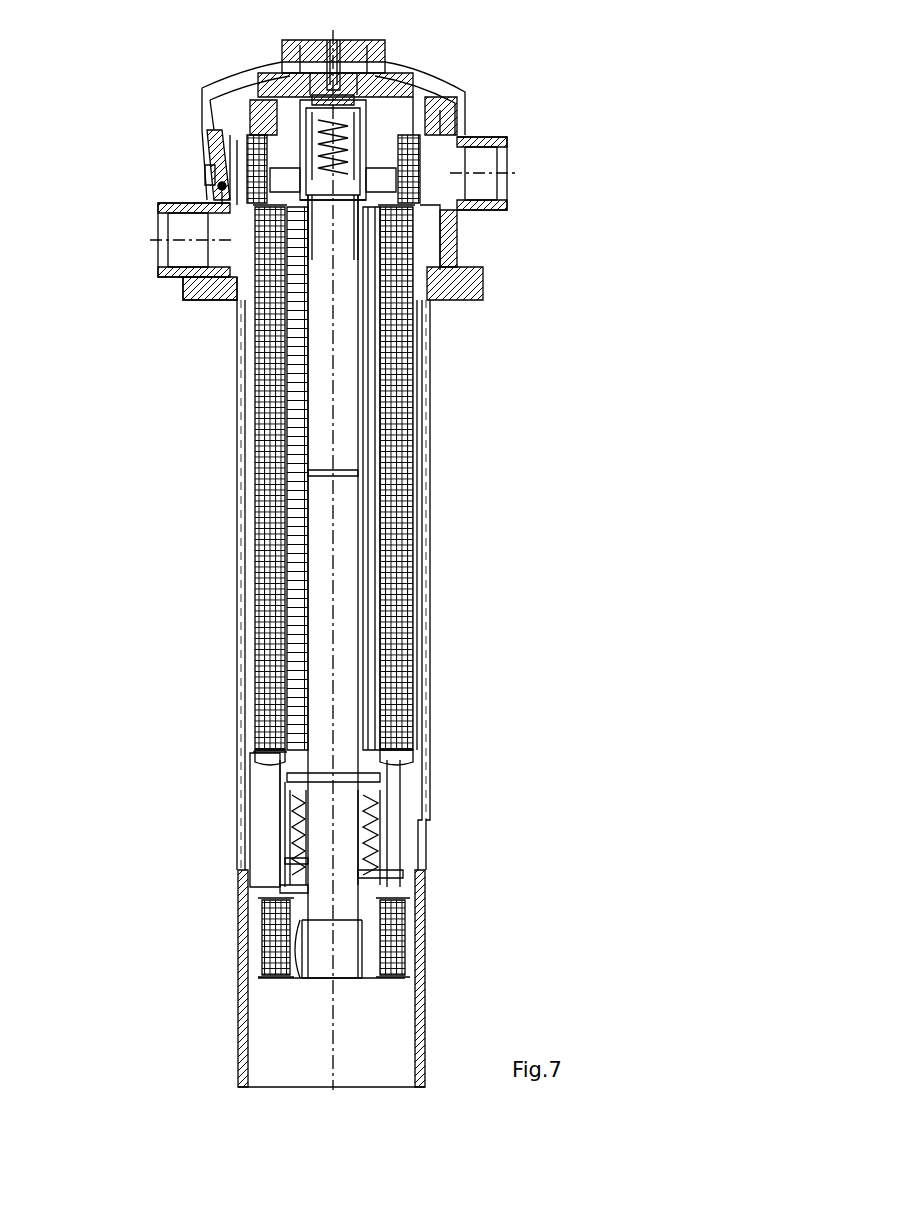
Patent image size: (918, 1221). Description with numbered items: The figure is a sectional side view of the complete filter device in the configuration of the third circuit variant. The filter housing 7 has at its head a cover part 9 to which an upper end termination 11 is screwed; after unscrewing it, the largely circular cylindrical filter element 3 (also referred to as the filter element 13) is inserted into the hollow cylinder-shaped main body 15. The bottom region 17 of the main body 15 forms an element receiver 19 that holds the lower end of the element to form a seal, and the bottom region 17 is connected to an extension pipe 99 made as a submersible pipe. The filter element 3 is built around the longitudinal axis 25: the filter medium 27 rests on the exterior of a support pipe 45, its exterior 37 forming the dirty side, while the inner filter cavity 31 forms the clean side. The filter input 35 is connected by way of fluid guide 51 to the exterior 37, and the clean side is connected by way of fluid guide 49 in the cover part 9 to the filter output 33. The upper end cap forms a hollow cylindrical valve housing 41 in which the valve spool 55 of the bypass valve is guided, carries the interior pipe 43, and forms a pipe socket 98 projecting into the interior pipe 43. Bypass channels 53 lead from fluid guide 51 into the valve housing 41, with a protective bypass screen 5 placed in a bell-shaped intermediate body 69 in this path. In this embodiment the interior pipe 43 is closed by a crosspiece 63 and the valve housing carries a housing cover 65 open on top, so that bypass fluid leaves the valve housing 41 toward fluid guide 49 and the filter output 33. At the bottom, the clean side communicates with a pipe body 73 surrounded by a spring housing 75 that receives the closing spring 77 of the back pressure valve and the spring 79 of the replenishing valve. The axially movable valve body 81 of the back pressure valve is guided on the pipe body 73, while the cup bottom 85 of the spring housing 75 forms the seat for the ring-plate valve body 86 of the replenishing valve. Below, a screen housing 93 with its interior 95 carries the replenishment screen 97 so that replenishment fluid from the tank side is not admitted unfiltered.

The filter element 3 is at (252, 580).
The protective bypass screen 5 is at (240, 157).
The filter housing 7 is at (205, 395).
The cover part 9 is at (213, 173).
The end termination 11 is at (247, 80).
The filter element 13 is at (417, 342).
The main body 15 is at (427, 422).
The bottom region 17 is at (445, 837).
The element receiver 19 is at (418, 763).
The longitudinal axis 25 is at (335, 1045).
The filter medium 27 is at (405, 600).
The inner filter cavity 31 is at (372, 555).
The filter output 33 is at (490, 158).
The filter input 35 is at (160, 228).
The exterior of the filter medium 37 is at (250, 352).
The valve housing 41 is at (257, 110).
The interior pipe 43 is at (363, 383).
The support pipe 45 is at (297, 493).
The fluid guide 49 is at (435, 98).
The fluid guide 51 is at (437, 238).
The bypass channels 53 is at (380, 182).
The valve spool 55 is at (217, 182).
The crosspiece 63 is at (327, 467).
The housing cover 65 is at (385, 70).
The intermediate body 69 is at (266, 120).
The pipe body 73 is at (280, 847).
The spring housing 75 is at (385, 848).
The closing spring 77 is at (283, 803).
The spring 79 is at (290, 862).
The valve body 81 is at (385, 798).
The cup bottom 85 is at (283, 890).
The valve body 86 is at (400, 873).
The screen housing 93 is at (292, 978).
The interior 95 is at (293, 937).
The replenishment screen 97 is at (390, 942).
The pipe socket 98 is at (318, 217).
The extension pipe 99 is at (425, 997).